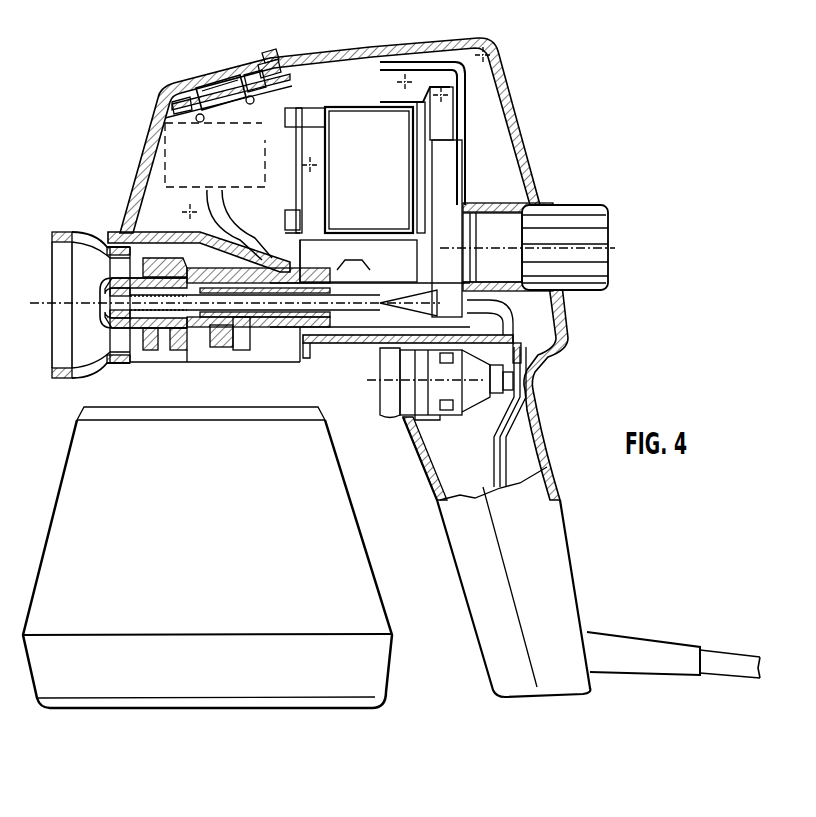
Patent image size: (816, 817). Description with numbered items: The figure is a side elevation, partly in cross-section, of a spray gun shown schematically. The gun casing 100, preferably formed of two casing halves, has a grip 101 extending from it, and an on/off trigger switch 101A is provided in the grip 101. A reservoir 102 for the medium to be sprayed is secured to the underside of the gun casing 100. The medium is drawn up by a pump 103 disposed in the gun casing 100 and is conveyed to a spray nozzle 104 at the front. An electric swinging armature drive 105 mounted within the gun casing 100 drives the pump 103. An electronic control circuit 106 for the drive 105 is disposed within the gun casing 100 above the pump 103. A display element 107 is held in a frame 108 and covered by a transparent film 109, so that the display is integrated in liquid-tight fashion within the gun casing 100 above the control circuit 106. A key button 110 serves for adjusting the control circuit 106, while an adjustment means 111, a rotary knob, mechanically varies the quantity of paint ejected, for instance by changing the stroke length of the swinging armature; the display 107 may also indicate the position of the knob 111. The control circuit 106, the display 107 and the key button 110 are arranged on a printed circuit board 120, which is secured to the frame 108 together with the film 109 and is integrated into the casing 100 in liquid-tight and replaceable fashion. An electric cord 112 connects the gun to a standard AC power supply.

The gun casing 100 is at (520, 147).
The grip 101 is at (550, 537).
The on/off trigger switch 101A is at (392, 383).
The reservoir 102 is at (70, 507).
The pump 103 is at (221, 310).
The spray nozzle 104 is at (75, 303).
The electric swinging armature drive 105 is at (367, 120).
The electronic control circuit 106 is at (174, 149).
The display element 107 is at (212, 95).
The frame 108 is at (182, 95).
The transparent film 109 is at (247, 137).
The key button 110 is at (259, 65).
The adjustment means 111 is at (560, 250).
The electric cord 112 is at (717, 657).
The printed circuit board 120 is at (165, 100).